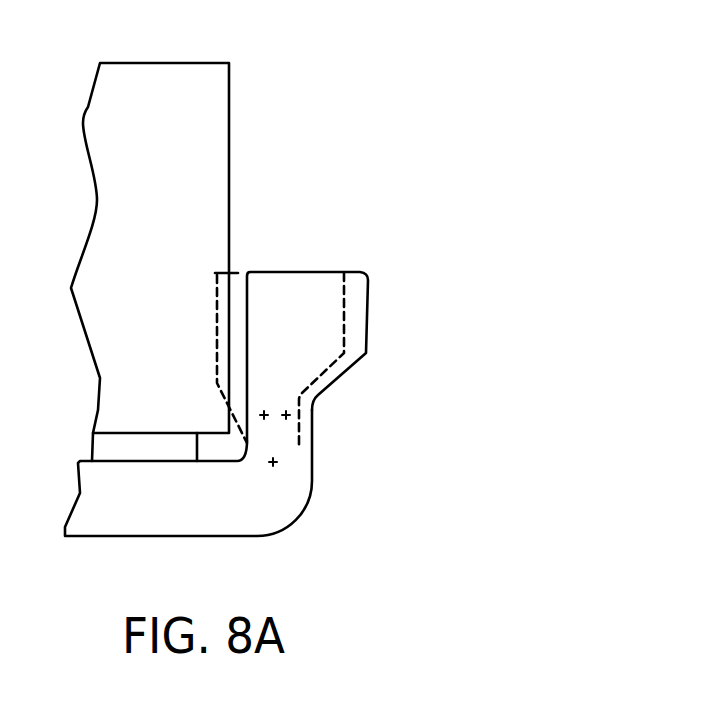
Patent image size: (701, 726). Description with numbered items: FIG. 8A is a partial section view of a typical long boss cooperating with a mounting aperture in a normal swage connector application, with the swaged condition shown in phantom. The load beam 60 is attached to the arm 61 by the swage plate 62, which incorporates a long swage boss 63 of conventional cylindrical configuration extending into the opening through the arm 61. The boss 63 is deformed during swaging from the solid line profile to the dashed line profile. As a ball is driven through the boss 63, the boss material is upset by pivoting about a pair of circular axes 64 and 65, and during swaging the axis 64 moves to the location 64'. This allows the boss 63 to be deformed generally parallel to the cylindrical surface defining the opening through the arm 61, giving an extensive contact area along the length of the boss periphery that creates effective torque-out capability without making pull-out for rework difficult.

The load beam 60 is at (113, 450).
The arm 61 is at (139, 309).
The swage plate 62 is at (187, 506).
The long swage boss 63 is at (275, 272).
The location of axis after swaging 64' is at (205, 398).
The circular axis 64 is at (322, 417).
The circular axis 65 is at (278, 465).